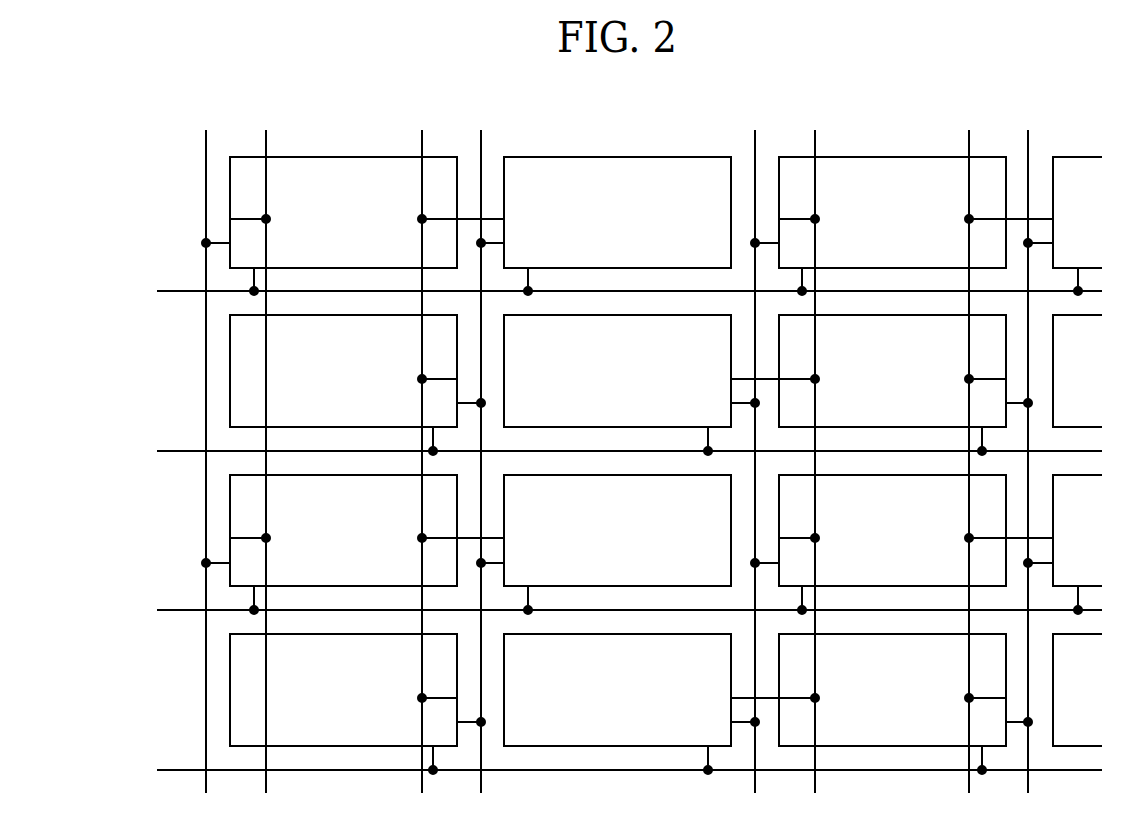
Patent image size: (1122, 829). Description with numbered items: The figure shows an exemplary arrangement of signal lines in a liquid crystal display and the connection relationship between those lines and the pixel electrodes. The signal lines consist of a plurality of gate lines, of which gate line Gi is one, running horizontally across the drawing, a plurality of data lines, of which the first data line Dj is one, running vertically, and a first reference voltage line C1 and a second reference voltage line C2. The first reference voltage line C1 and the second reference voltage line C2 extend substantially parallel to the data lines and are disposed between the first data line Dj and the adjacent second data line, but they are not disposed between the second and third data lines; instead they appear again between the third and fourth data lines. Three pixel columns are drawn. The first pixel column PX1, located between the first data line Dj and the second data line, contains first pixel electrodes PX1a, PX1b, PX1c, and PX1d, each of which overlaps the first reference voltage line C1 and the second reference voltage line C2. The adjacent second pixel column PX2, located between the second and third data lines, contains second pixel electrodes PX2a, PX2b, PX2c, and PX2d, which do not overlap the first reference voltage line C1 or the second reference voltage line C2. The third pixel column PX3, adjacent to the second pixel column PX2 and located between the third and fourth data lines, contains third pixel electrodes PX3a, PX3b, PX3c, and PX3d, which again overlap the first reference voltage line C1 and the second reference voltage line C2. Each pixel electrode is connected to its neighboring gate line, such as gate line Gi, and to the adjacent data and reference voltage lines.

The first pixel column PX1 is at (343, 424).
The second pixel column PX2 is at (618, 424).
The third pixel column PX3 is at (891, 424).
The first pixel electrode PX1a is at (329, 226).
The first pixel electrode PX1b is at (357, 385).
The first pixel electrode PX1c is at (329, 544).
The first pixel electrode PX1d is at (357, 704).
The second pixel electrode PX2a is at (574, 226).
The second pixel electrode PX2b is at (661, 385).
The second pixel electrode PX2c is at (574, 544).
The second pixel electrode PX2d is at (661, 704).
The third pixel electrode PX3a is at (878, 226).
The third pixel electrode PX3b is at (905, 385).
The third pixel electrode PX3c is at (878, 544).
The third pixel electrode PX3d is at (905, 704).
The first data line Dj is at (206, 447).
The first reference voltage line C1 is at (540, 447).
The second reference voltage line C2 is at (695, 447).
The gate line Gi is at (616, 292).